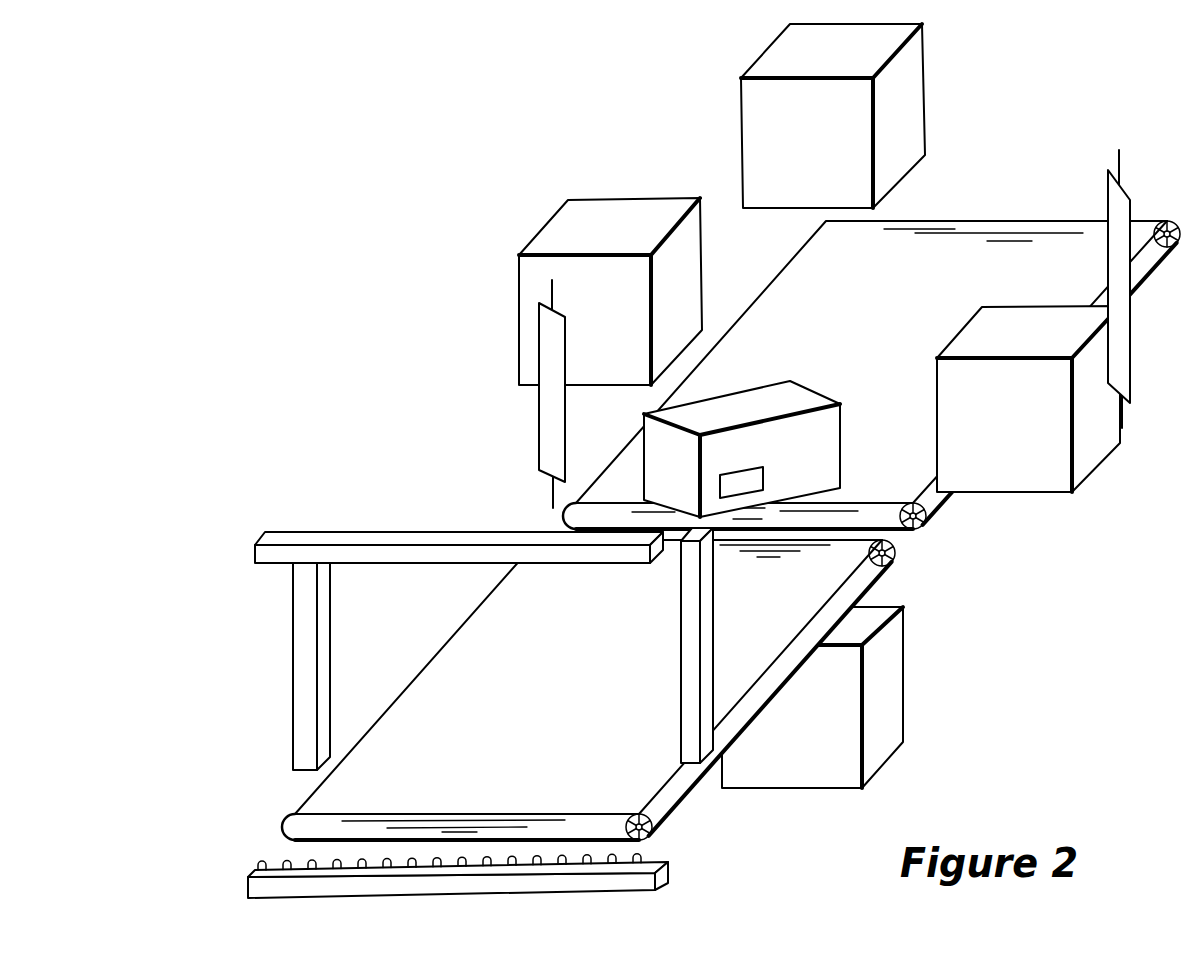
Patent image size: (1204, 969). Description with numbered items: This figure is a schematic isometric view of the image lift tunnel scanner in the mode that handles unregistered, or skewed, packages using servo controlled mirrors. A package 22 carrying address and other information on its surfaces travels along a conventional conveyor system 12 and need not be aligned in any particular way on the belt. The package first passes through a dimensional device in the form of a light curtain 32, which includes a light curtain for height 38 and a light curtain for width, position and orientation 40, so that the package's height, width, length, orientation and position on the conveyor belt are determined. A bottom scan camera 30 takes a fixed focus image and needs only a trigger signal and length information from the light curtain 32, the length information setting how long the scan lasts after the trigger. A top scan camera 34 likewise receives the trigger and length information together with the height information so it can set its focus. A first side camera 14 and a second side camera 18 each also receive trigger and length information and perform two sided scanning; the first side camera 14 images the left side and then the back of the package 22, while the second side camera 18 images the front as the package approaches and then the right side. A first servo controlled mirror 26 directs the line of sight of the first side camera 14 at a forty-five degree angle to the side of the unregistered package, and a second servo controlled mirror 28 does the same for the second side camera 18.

The conveyor system 12 is at (731, 530).
The first side camera 14 is at (610, 210).
The second side camera 18 is at (1018, 475).
The package 22 is at (807, 395).
The first servo controlled mirror 26 is at (553, 425).
The second servo controlled mirror 28 is at (1127, 328).
The bottom scan camera 30 is at (887, 698).
The light curtain 32 is at (424, 565).
The top scan camera 34 is at (912, 105).
The light curtain for height 38 is at (305, 648).
The light curtain for width, position and orientation 40 is at (670, 878).